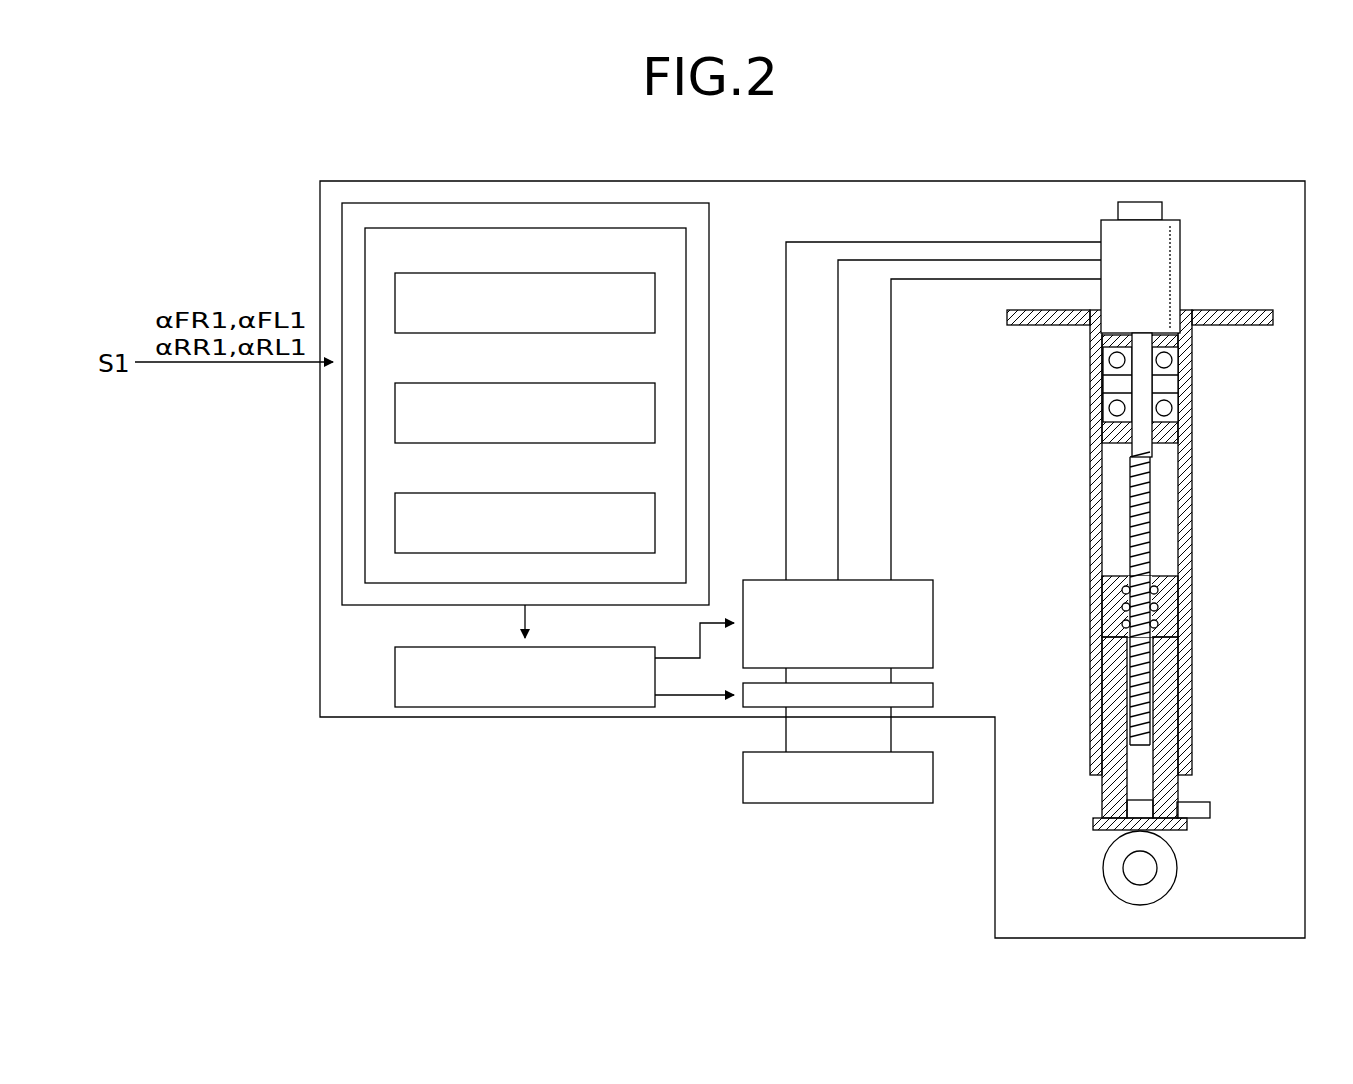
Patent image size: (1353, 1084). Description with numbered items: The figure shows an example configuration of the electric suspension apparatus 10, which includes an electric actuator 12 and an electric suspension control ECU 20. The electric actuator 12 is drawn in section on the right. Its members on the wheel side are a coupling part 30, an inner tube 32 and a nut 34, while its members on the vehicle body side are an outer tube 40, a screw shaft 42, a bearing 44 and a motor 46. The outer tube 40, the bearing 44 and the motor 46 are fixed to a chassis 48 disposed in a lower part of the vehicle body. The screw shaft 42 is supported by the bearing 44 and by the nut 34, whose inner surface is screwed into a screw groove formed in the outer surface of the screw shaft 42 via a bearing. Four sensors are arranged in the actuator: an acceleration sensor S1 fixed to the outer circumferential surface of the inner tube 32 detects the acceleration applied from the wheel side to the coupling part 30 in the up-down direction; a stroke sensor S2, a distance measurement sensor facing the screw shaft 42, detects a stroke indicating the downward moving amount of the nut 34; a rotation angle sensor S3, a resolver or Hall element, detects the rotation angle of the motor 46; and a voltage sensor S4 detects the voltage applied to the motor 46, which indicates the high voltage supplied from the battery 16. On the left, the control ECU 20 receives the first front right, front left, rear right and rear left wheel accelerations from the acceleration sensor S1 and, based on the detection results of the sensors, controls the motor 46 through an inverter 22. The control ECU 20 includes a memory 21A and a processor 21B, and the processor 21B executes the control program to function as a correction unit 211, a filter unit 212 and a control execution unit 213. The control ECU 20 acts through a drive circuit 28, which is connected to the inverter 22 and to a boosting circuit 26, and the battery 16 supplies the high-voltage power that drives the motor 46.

The electric suspension apparatus 10 is at (812, 181).
The electric actuator 12 is at (1152, 507).
The battery 16 is at (743, 767).
The electric suspension control ECU 20 is at (459, 401).
The memory 21A is at (342, 230).
The processor 21B is at (365, 240).
The inverter 22 is at (913, 575).
The boosting circuit 26 is at (933, 695).
The drive circuit 28 is at (395, 687).
The coupling part 30 is at (1176, 870).
The inner tube 32 is at (1097, 818).
The nut 34 is at (1107, 595).
The outer tube 40 is at (1192, 705).
The screw shaft 42 is at (1178, 690).
The bearing 44 is at (1180, 363).
The motor 46 is at (1180, 221).
The chassis 48 is at (1245, 310).
The correction unit 211 is at (508, 273).
The filter unit 212 is at (508, 383).
The control execution unit 213 is at (508, 493).
The acceleration sensor S1 is at (1210, 810).
The stroke sensor S2 is at (1138, 808).
The rotation angle sensor S3 is at (1149, 165).
The voltage sensor S4 is at (1135, 210).